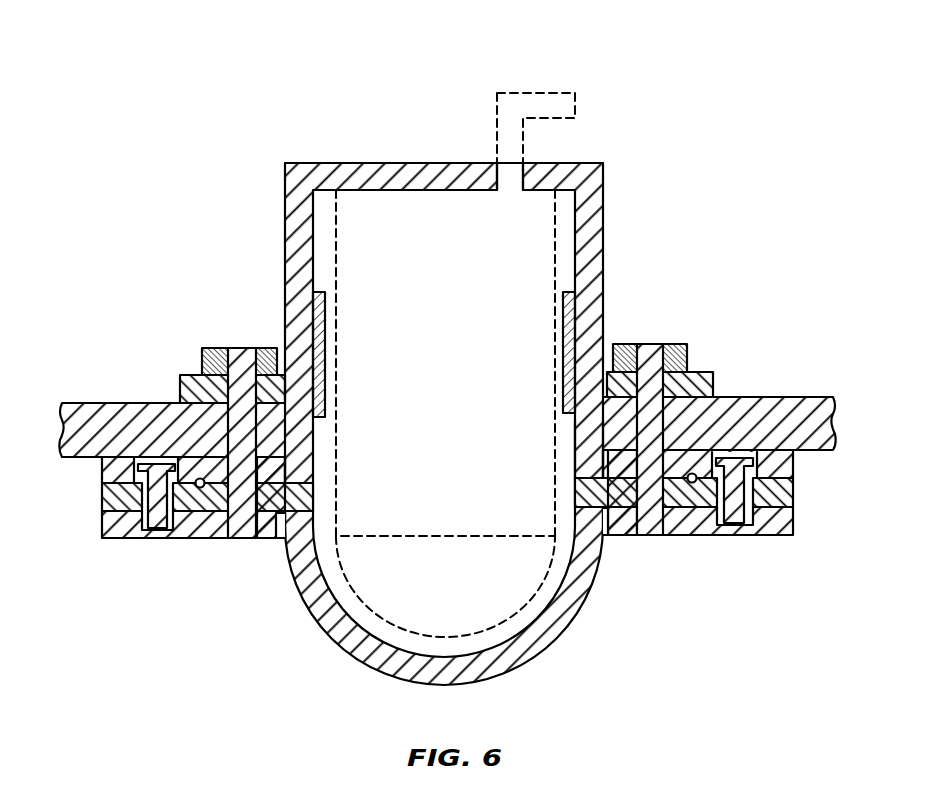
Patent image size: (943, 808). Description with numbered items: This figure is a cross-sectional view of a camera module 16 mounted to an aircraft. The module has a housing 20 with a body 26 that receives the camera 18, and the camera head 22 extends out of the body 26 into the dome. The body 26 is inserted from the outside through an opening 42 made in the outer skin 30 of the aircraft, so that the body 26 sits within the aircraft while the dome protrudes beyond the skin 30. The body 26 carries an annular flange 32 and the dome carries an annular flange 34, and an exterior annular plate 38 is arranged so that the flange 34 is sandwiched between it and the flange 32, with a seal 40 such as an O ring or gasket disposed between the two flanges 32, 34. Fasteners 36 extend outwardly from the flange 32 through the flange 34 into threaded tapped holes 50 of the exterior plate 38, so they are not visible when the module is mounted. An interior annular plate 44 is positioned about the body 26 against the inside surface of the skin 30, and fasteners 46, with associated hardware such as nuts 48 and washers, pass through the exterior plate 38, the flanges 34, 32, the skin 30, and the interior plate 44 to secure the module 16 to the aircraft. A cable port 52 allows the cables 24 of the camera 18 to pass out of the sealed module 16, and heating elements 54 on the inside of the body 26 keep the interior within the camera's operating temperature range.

The camera module 16 is at (567, 49).
The camera 18 is at (557, 205).
The housing 20 is at (409, 396).
The camera head 22 is at (547, 585).
The cables 24 is at (555, 96).
The body 26 is at (284, 220).
The outer skin 30 is at (95, 403).
The annular flange 32 is at (100, 467).
The annular flange 34 is at (100, 497).
The fasteners 36 is at (135, 540).
The annular plate 38 is at (100, 525).
The seal 40 is at (204, 492).
The opening 42 is at (598, 438).
The annular plate 44 is at (697, 370).
The fasteners 46 is at (247, 540).
The nuts 48 is at (215, 348).
The threaded tapped holes 50 is at (148, 540).
The cable port 52 is at (523, 168).
The heating elements 54 is at (325, 322).